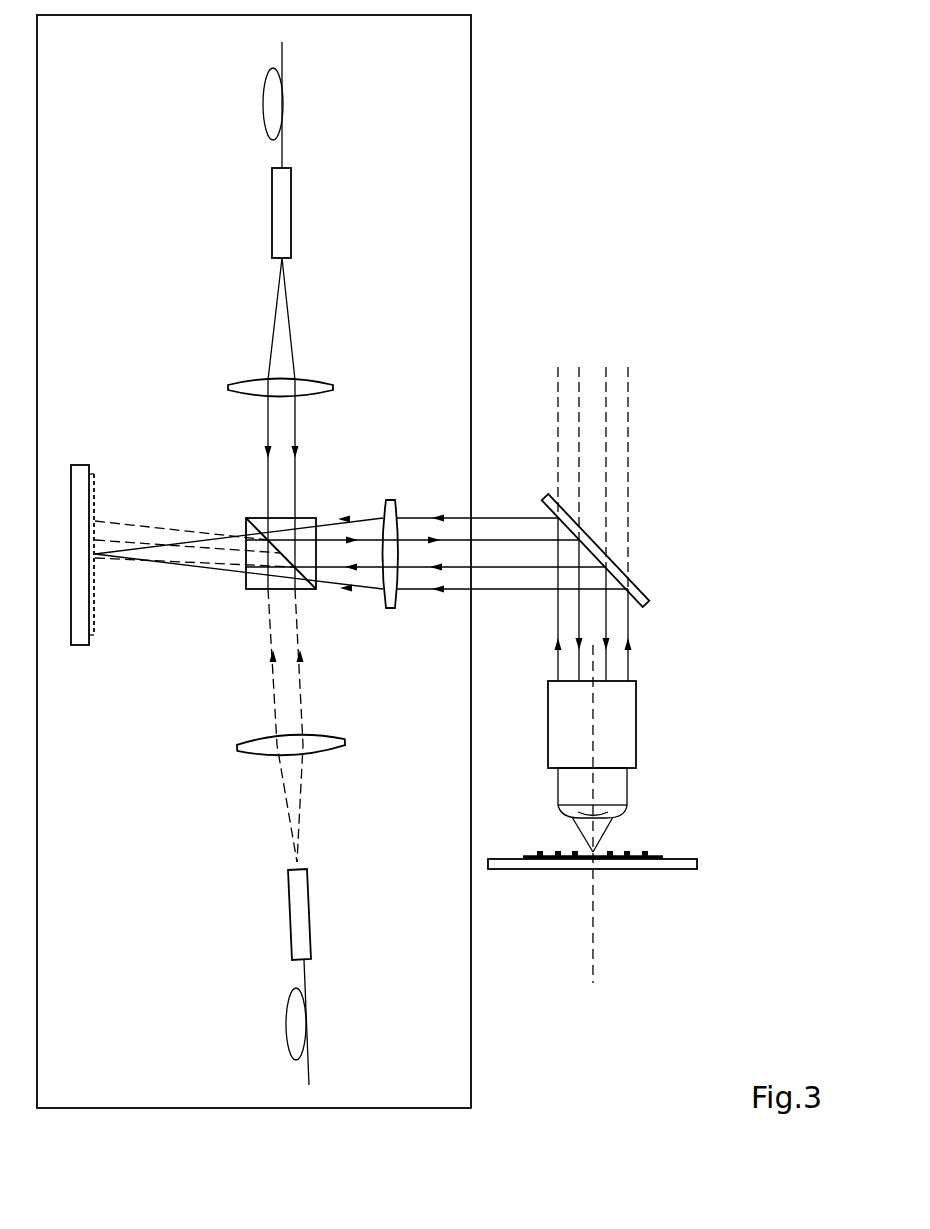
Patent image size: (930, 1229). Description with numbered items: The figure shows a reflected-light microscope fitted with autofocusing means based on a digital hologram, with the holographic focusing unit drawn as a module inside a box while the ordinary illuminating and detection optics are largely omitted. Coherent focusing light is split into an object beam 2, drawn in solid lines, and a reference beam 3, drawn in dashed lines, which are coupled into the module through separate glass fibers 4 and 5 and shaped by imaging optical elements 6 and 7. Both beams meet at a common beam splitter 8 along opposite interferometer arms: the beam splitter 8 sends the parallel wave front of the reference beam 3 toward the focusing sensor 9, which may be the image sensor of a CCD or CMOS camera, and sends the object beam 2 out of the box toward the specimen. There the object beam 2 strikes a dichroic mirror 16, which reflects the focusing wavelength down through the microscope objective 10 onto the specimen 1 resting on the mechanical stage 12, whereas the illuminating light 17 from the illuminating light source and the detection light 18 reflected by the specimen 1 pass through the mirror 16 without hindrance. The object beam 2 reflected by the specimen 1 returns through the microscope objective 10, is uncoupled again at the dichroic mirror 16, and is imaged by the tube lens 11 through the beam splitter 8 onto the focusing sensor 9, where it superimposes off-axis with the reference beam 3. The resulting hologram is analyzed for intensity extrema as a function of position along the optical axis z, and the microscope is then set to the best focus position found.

The specimen 1 is at (647, 852).
The object beam 2 is at (275, 305).
The reference beam 3 is at (288, 808).
The glass fiber 4 is at (272, 203).
The glass fiber 5 is at (290, 917).
The imaging optical element 6 is at (240, 380).
The imaging optical element 7 is at (250, 740).
The beam splitter 8 is at (262, 517).
The focusing sensor 9 is at (83, 645).
The microscope objective 10 is at (637, 708).
The tube lens 11 is at (393, 500).
The mechanical stage 12 is at (682, 870).
The dichroic mirror 16 is at (637, 583).
The illuminating light 17 is at (607, 367).
The detection light 18 is at (557, 367).
The optical axis z is at (593, 943).